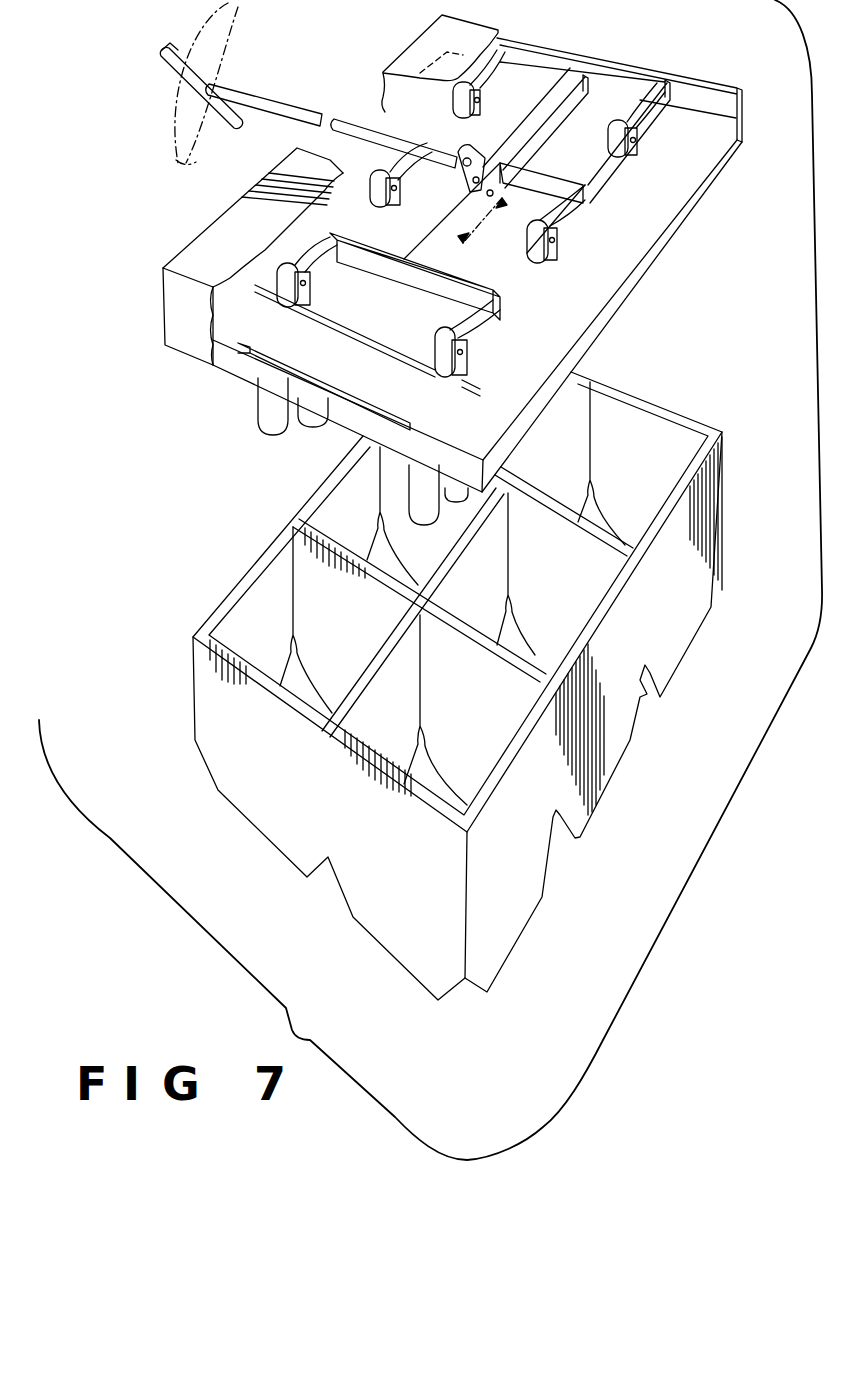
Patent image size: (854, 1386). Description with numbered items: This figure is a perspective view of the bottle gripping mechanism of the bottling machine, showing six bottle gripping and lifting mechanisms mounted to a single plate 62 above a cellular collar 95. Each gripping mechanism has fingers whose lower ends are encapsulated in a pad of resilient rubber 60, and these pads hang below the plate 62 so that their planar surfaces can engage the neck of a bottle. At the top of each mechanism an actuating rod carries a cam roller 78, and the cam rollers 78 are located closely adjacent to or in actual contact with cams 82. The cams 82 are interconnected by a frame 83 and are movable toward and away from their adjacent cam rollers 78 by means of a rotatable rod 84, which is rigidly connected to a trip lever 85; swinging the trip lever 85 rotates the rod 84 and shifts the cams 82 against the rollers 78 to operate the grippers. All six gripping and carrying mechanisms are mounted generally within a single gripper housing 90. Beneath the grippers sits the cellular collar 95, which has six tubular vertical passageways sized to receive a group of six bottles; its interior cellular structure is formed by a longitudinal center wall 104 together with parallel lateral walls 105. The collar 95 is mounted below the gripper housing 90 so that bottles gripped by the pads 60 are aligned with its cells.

The pad of resilient rubber 60 is at (325, 420).
The suspension plate 62 is at (652, 253).
The cam roller 78 is at (453, 100).
The cam 82 is at (648, 117).
The frame 83 is at (397, 242).
The rotatable rod 84 is at (270, 107).
The trip lever 85 is at (173, 70).
The gripper housing 90 is at (173, 308).
The cellular collar 95 is at (710, 507).
The longitudinal center wall 104 is at (362, 510).
The lateral walls 105 is at (665, 461).